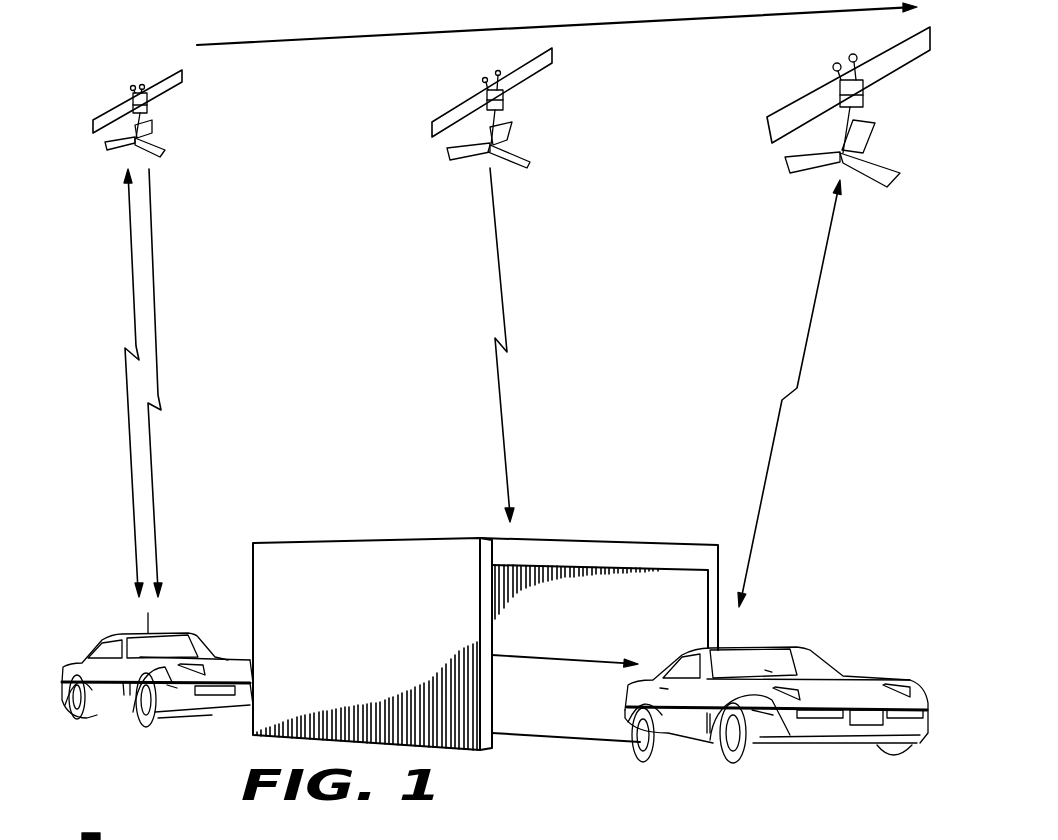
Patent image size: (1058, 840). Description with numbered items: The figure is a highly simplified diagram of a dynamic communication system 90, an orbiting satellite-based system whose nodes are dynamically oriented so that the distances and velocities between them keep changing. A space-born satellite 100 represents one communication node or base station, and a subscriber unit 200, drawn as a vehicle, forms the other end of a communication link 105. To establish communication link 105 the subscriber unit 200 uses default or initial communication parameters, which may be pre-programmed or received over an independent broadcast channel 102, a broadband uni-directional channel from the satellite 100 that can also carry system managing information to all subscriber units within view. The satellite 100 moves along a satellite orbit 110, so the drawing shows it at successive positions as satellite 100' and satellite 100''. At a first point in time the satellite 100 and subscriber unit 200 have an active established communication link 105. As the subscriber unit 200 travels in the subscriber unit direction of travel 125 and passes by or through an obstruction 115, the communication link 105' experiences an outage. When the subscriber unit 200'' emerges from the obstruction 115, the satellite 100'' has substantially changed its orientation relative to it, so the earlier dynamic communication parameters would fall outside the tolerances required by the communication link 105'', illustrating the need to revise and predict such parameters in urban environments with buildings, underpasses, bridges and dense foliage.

The dynamic communication system 90 is at (340, 403).
The satellite 100 is at (126, 113).
The satellite 100' is at (482, 108).
The satellite 100'' is at (838, 107).
The independent broadcast channel 102 is at (154, 288).
The communication link 105 is at (108, 383).
The communication link 105' is at (529, 345).
The communication link 105'' is at (789, 393).
The satellite orbit 110 is at (342, 37).
The obstruction 115 is at (375, 651).
The subscriber unit direction of travel 125 is at (537, 658).
The subscriber unit 200 is at (157, 657).
The subscriber unit 200'' is at (776, 687).